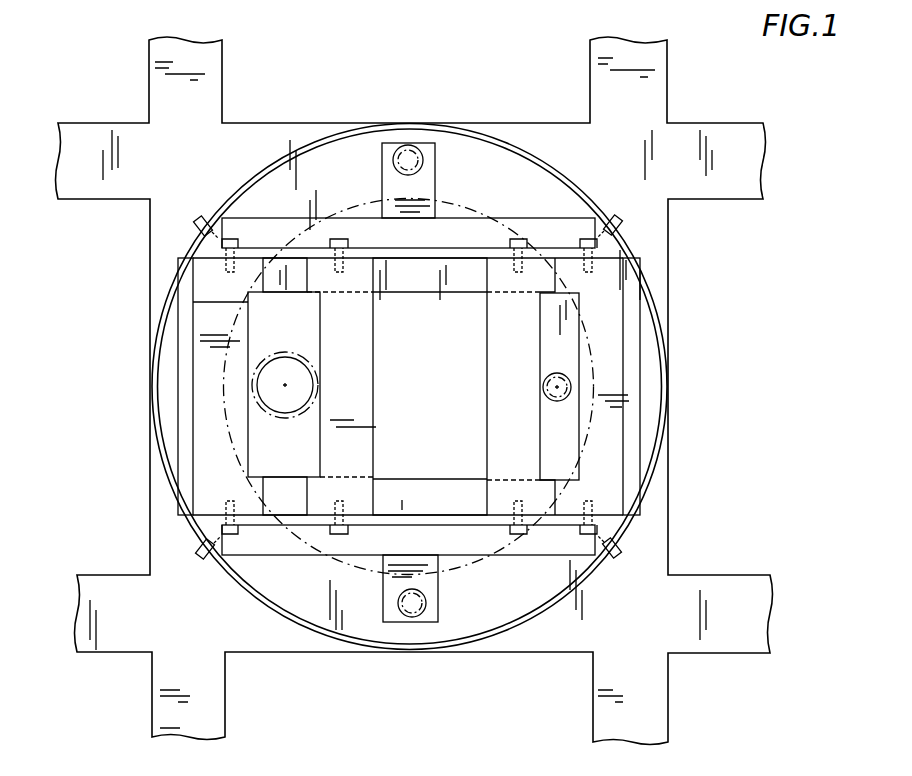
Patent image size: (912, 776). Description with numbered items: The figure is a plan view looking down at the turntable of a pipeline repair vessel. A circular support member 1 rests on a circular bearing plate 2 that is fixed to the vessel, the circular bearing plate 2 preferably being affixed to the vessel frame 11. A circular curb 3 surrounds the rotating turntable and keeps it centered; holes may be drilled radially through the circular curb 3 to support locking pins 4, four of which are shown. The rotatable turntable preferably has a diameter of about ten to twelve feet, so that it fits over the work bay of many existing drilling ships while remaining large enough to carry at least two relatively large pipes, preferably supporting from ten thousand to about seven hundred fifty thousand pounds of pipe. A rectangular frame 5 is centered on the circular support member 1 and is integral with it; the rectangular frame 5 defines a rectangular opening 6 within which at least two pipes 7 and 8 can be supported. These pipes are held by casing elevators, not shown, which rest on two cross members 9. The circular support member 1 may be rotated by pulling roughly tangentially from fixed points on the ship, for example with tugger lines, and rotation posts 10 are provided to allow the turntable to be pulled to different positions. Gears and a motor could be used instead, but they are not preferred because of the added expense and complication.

The circular support member 1 is at (273, 186).
The circular bearing plate 2 is at (805, 388).
The circular curb 3 is at (580, 598).
The locking pins 4 is at (201, 220).
The rectangular frame 5 is at (542, 232).
The rectangular opening 6 is at (446, 410).
The pipe 7 is at (294, 413).
The pipe 8 is at (547, 399).
The cross members 9 is at (336, 315).
The rotation posts 10 is at (390, 146).
The vessel frame 11 is at (264, 640).